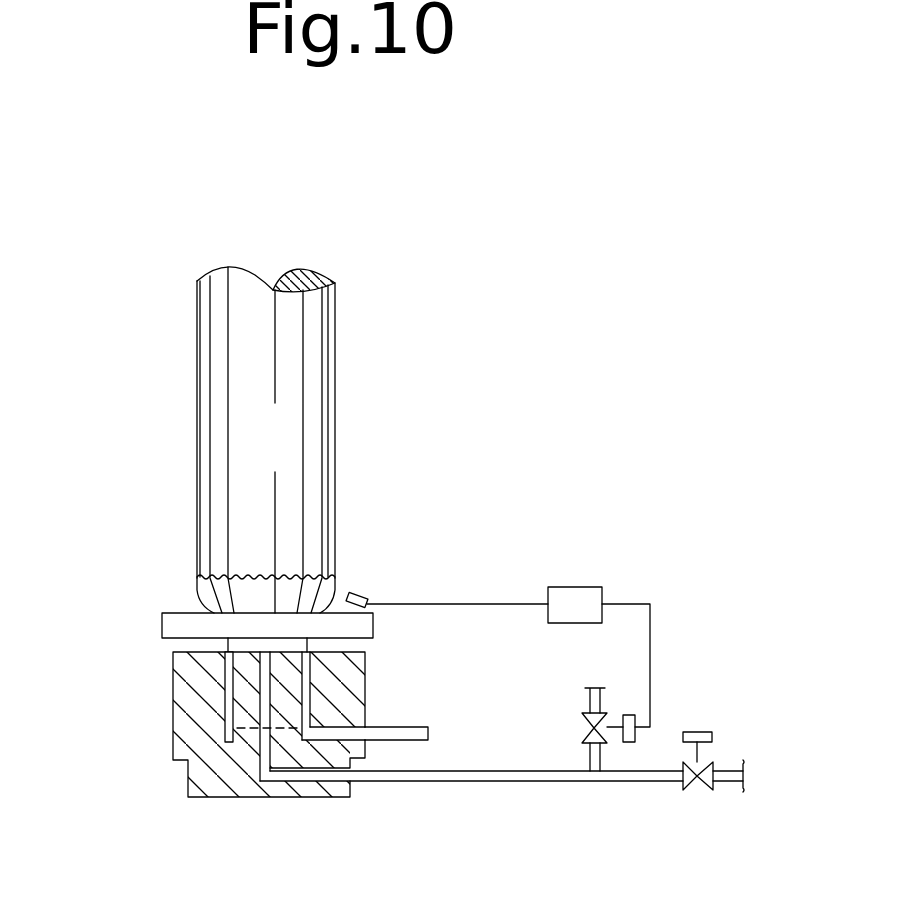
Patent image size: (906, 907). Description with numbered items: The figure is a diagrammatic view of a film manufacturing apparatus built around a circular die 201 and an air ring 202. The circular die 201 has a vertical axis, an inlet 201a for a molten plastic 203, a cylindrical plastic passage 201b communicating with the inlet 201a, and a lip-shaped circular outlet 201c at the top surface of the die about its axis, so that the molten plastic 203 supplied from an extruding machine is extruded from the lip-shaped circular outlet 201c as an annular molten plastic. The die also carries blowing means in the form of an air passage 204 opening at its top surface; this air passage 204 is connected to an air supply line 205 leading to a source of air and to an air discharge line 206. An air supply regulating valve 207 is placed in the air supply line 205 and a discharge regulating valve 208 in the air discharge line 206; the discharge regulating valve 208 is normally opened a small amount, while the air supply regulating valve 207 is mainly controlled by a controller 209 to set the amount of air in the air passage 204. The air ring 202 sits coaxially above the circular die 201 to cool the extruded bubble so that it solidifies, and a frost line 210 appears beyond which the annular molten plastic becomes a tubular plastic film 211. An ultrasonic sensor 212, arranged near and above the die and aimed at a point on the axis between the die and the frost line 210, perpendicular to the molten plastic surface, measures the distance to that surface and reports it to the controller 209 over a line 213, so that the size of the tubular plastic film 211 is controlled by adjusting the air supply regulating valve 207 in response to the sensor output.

The circular die 201 is at (182, 717).
The inlet 201a is at (383, 733).
The cylindrical plastic passage 201b is at (229, 740).
The lip-shaped circular outlet 201c is at (310, 646).
The air ring 202 is at (177, 635).
The molten plastic 203 is at (405, 742).
The air passage 204 is at (270, 797).
The air supply line 205 is at (592, 688).
The air discharge line 206 is at (745, 770).
The air supply regulating valve 207 is at (637, 740).
The discharge regulating valve 208 is at (693, 732).
The controller 209 is at (577, 587).
The frost line 210 is at (308, 580).
The tubular plastic film 211 is at (337, 373).
The ultrasonic sensor 212 is at (358, 592).
The line 213 is at (482, 602).